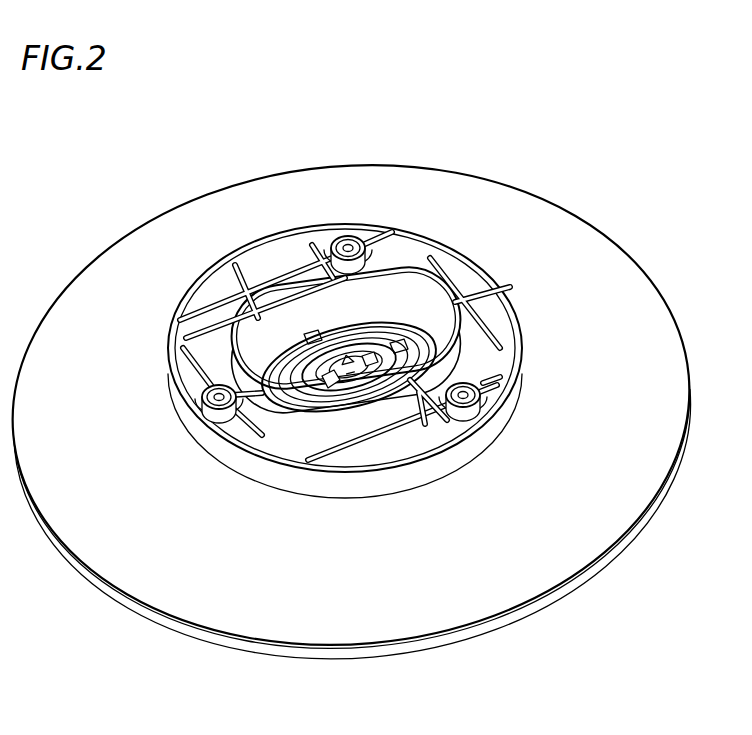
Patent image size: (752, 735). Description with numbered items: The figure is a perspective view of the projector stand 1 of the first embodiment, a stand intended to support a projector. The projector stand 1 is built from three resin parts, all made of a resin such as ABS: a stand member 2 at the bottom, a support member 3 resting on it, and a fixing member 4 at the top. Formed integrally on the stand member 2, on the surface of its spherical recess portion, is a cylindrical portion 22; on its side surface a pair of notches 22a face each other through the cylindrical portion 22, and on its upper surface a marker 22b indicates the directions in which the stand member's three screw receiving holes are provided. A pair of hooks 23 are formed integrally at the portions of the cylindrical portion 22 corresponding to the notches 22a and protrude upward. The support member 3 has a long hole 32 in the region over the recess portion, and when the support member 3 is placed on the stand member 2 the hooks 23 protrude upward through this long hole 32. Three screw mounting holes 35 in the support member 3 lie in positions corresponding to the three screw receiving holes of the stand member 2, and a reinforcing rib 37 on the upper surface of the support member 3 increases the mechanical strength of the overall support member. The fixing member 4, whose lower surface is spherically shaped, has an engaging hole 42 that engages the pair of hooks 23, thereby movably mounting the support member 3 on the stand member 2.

The projector stand 1 is at (619, 182).
The stand member 2 is at (561, 240).
The support member 3 is at (505, 292).
The fixing member 4 is at (398, 358).
The cylindrical portion 22 is at (334, 350).
The notches 22a is at (333, 385).
The marker 22b is at (353, 352).
The hooks 23 is at (290, 340).
The long hole 32 is at (448, 392).
The screw mounting holes 35 is at (213, 387).
The reinforcing rib 37 is at (412, 428).
The engaging hole 42 is at (428, 342).